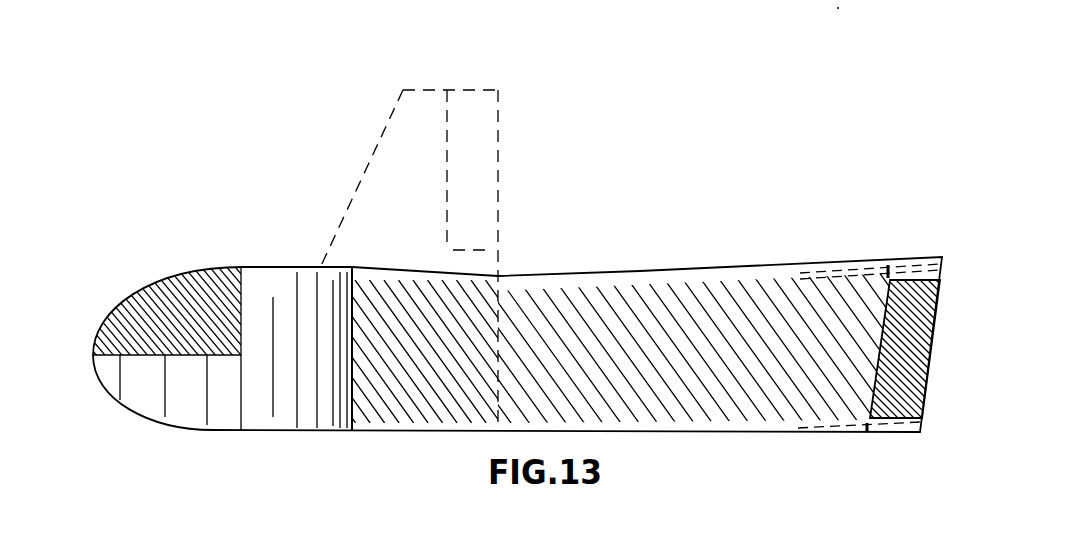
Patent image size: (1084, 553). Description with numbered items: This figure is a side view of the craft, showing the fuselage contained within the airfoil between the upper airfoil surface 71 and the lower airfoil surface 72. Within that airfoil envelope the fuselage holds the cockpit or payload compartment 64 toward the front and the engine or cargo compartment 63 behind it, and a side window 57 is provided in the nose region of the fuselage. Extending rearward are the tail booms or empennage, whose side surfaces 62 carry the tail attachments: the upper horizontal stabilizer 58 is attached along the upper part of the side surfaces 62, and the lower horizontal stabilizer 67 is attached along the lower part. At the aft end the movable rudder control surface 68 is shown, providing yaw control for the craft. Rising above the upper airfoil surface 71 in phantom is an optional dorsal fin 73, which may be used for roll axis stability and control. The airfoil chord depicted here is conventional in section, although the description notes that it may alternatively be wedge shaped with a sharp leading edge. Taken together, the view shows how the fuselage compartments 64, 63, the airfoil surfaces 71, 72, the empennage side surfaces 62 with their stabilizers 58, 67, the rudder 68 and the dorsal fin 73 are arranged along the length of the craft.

The side window 57 is at (167, 310).
The upper horizontal stabilizer 58 is at (813, 275).
The side surfaces 62 is at (668, 298).
The engine or cargo compartment 63 is at (413, 405).
The cockpit or payload compartment 64 is at (275, 297).
The lower horizontal stabilizer 67 is at (825, 424).
The movable rudder control surface 68 is at (910, 290).
The upper airfoil surface 71 is at (310, 267).
The lower airfoil surface 72 is at (250, 430).
The dorsal fin 73 is at (430, 120).